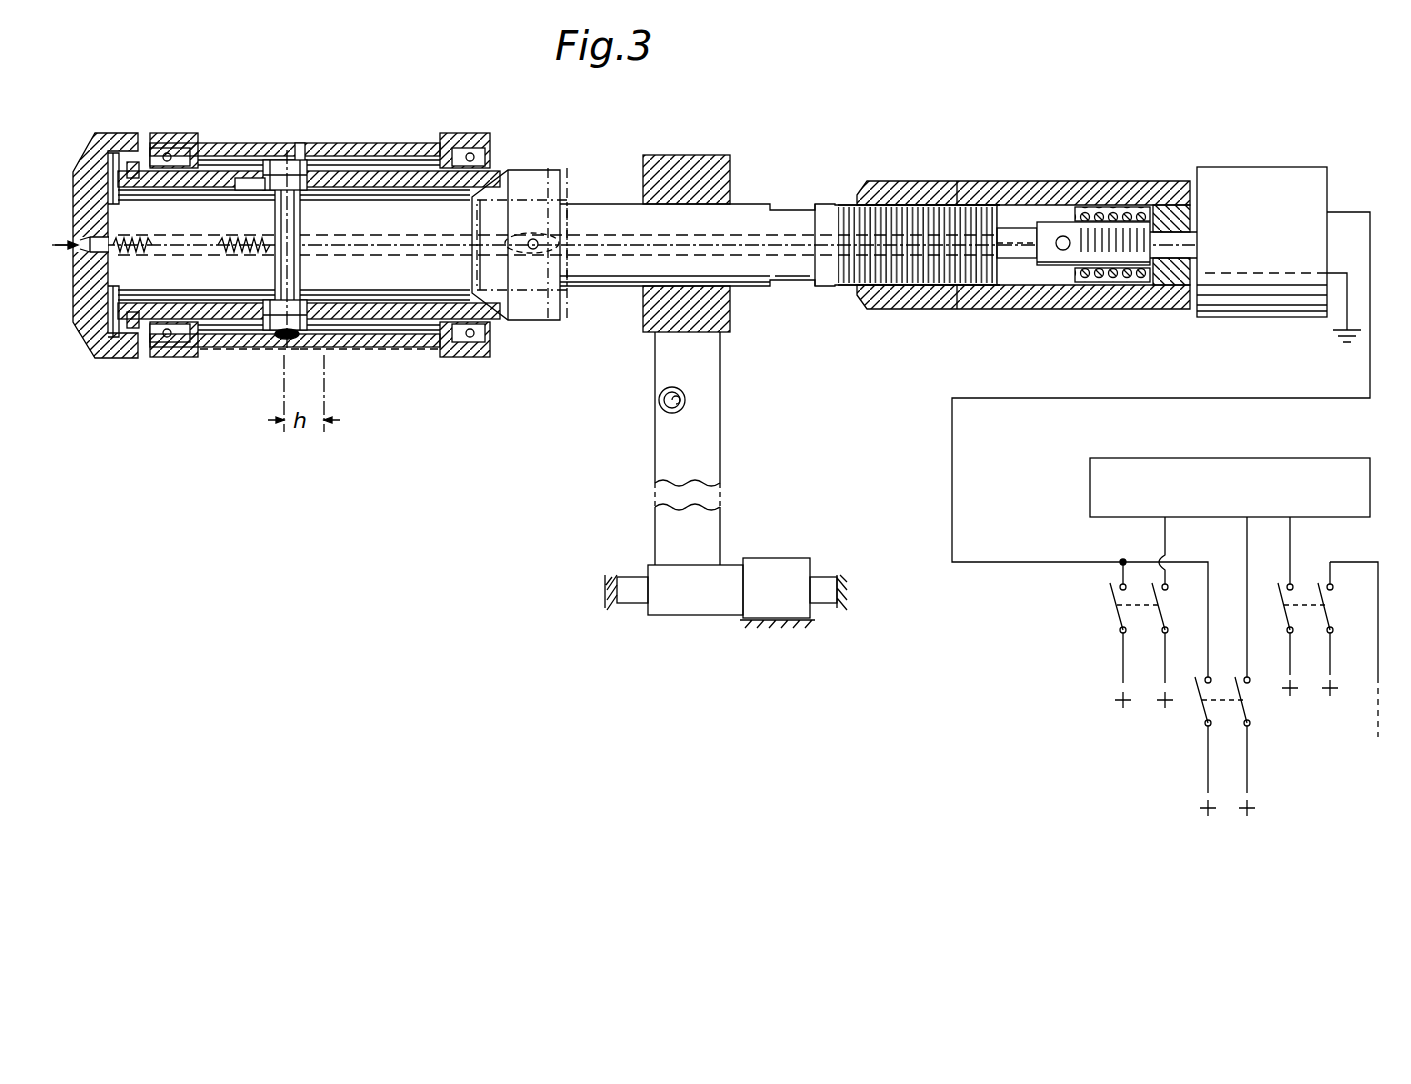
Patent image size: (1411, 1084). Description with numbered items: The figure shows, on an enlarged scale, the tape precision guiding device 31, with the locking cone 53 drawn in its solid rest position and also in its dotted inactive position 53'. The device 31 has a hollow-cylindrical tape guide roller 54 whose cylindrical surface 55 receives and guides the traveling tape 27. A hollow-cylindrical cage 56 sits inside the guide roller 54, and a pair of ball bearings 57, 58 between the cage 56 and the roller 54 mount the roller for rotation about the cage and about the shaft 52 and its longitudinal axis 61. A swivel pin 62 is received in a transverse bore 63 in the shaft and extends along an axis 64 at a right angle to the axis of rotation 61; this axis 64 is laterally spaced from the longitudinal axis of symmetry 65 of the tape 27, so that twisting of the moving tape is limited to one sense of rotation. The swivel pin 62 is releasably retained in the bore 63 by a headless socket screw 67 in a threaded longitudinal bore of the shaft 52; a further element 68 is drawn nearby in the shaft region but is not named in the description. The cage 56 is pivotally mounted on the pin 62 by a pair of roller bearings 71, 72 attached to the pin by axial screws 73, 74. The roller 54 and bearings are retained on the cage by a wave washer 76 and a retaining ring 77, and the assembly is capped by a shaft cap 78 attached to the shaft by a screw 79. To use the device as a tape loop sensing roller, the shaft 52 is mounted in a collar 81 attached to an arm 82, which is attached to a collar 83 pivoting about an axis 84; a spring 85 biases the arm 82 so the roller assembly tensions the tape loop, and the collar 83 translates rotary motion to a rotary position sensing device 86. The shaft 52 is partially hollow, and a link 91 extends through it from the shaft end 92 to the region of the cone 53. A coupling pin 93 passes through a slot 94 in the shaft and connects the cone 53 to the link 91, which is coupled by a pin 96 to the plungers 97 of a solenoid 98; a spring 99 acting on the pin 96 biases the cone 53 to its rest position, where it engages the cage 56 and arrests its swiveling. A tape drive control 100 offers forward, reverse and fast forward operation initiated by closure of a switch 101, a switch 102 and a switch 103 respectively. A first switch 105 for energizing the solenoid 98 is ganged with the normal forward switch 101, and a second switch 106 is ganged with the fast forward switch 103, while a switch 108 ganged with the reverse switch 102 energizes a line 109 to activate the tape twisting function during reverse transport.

The tape precision guiding device 31 is at (175, 126).
The tape 27 is at (262, 352).
The shaft 52 is at (420, 248).
The locking cone 53 is at (519, 222).
The inactive position of locking cone 53' is at (593, 218).
The tape guide roller 54 is at (478, 132).
The cylindrical surface 55 is at (412, 143).
The cage 56 is at (362, 170).
The ball bearing 57 is at (182, 357).
The ball bearing 58 is at (490, 340).
The longitudinal axis 61 is at (408, 256).
The swivel pin 62 is at (318, 200).
The transverse bore 63 is at (300, 270).
The axis 64 is at (272, 215).
The longitudinal axis of symmetry 65 is at (324, 352).
The headless socket screw 67 is at (212, 240).
The spring 68 is at (192, 252).
The roller bearing 71 is at (240, 186).
The roller bearing 72 is at (276, 286).
The axial screw 73 is at (300, 143).
The axial screw 74 is at (285, 340).
The wave washer 76 is at (136, 333).
The retaining ring 77 is at (118, 345).
The shaft cap 78 is at (97, 352).
The screw 79 is at (80, 252).
The collar 81 is at (645, 320).
The arm 82 is at (655, 447).
The collar 83 is at (693, 605).
The axis 84 is at (633, 605).
The spring 85 is at (660, 400).
The rotary position sensing device 86 is at (800, 605).
The link 91 is at (1017, 255).
The shaft end 92 is at (1000, 205).
The coupling pin 93 is at (538, 243).
The slot 94 is at (585, 245).
The pin 96 is at (1052, 266).
The plunger 97 is at (1162, 230).
The solenoid 98 is at (1287, 167).
The spring 99 is at (1098, 205).
The tape drive control 100 is at (1258, 458).
The normal forward switch 101 is at (1167, 620).
The reverse switch 102 is at (1290, 615).
The fast forward switch 103 is at (1250, 712).
The first switch 105 is at (1115, 618).
The second switch 106 is at (1196, 712).
The switch 108 is at (1332, 618).
The line 109 is at (1388, 552).